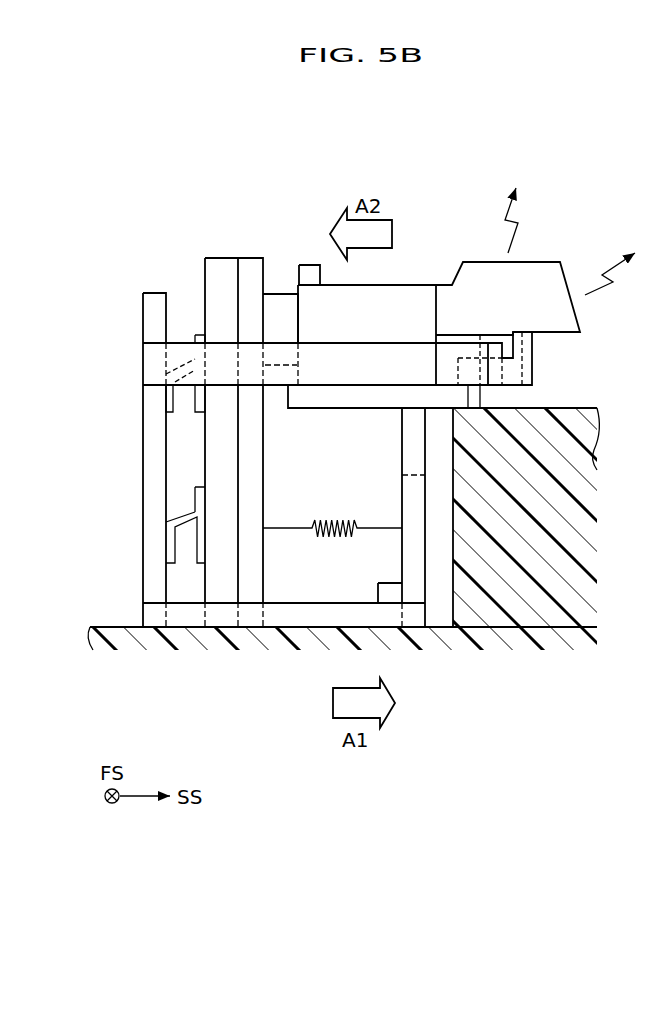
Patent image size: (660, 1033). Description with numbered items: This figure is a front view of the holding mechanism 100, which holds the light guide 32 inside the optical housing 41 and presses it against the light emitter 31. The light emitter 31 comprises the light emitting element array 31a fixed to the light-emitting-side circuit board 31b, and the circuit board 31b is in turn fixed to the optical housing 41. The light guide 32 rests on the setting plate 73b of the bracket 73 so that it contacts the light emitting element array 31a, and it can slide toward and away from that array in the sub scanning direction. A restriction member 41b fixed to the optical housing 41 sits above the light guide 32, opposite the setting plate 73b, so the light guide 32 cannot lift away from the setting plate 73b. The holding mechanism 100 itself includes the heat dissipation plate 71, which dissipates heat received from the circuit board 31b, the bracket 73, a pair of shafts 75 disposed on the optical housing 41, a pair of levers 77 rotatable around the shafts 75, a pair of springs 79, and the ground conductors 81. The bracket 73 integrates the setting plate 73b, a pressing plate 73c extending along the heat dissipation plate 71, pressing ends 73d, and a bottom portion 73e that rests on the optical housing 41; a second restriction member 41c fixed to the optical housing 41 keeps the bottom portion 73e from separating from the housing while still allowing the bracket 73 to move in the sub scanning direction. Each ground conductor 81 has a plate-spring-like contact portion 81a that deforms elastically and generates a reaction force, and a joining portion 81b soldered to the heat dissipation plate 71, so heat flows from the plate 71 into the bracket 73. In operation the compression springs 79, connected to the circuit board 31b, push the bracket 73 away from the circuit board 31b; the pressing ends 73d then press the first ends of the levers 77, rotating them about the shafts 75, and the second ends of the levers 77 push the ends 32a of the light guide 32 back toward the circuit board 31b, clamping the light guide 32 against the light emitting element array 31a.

The holding mechanism 100 is at (330, 428).
The light emitter 31 is at (248, 383).
The light emitting element array 31a is at (281, 296).
The light-emitting-side circuit board 31b is at (247, 283).
The light guide 32 is at (556, 244).
The ends of the light guide 32a is at (410, 305).
The optical housing 41 is at (519, 648).
The restriction member 41b is at (310, 272).
The restriction member 41c is at (390, 597).
The heat dissipation plate 71 is at (210, 278).
The bracket 73 is at (130, 305).
The setting plate 73b is at (304, 398).
The pressing plate 73c is at (152, 403).
The pressing ends 73d is at (492, 378).
The bottom portion 73e is at (287, 630).
The shafts 75 is at (492, 402).
The levers 77 is at (530, 350).
The springs 79 is at (322, 603).
The ground conductors 81 is at (122, 521).
The contact portion 81a is at (170, 537).
The joining portion 81b is at (200, 497).